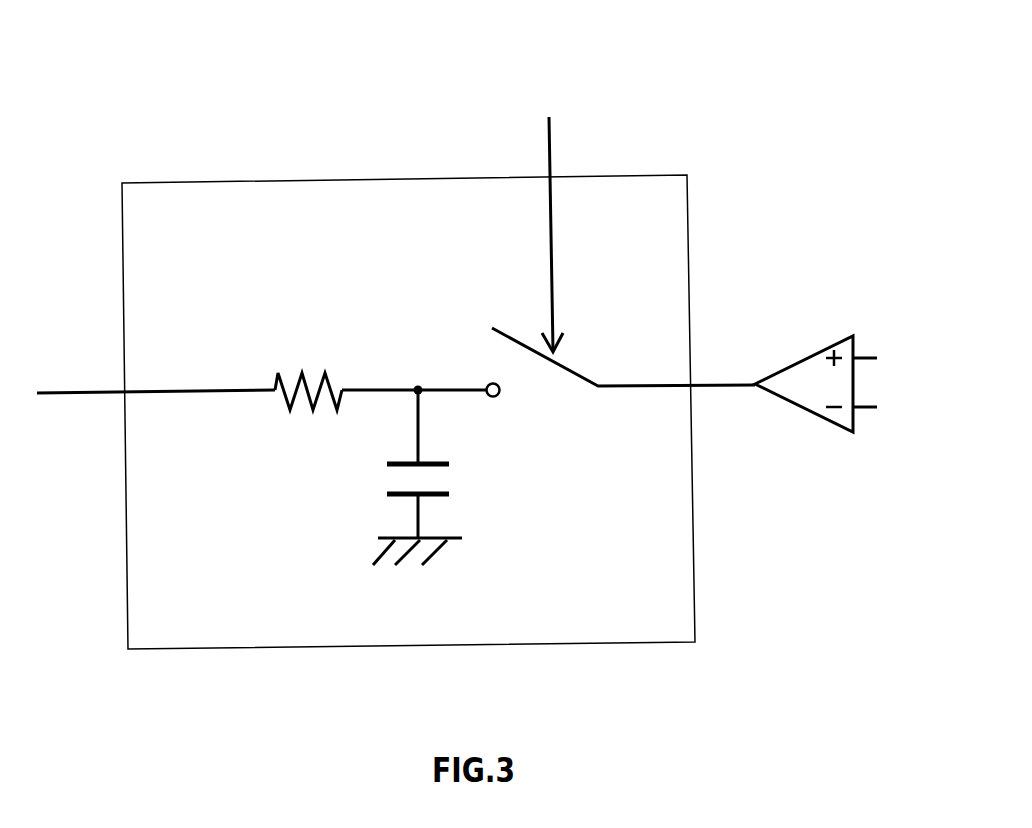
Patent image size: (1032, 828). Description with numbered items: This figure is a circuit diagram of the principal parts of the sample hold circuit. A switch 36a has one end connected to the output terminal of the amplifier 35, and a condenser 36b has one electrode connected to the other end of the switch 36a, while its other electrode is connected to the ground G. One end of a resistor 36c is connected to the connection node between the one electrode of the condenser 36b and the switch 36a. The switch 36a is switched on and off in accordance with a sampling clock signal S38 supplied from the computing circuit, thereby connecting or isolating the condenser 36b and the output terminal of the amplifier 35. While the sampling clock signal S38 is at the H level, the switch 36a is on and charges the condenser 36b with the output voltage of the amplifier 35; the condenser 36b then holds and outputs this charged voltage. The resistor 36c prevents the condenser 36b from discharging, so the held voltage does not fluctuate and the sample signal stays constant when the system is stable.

The amplifier 35 is at (817, 348).
The switch 36a is at (568, 375).
The condenser 36b is at (438, 455).
The resistor 36c is at (300, 370).
The sampling clock signal S38 is at (547, 189).
The ground G is at (431, 554).